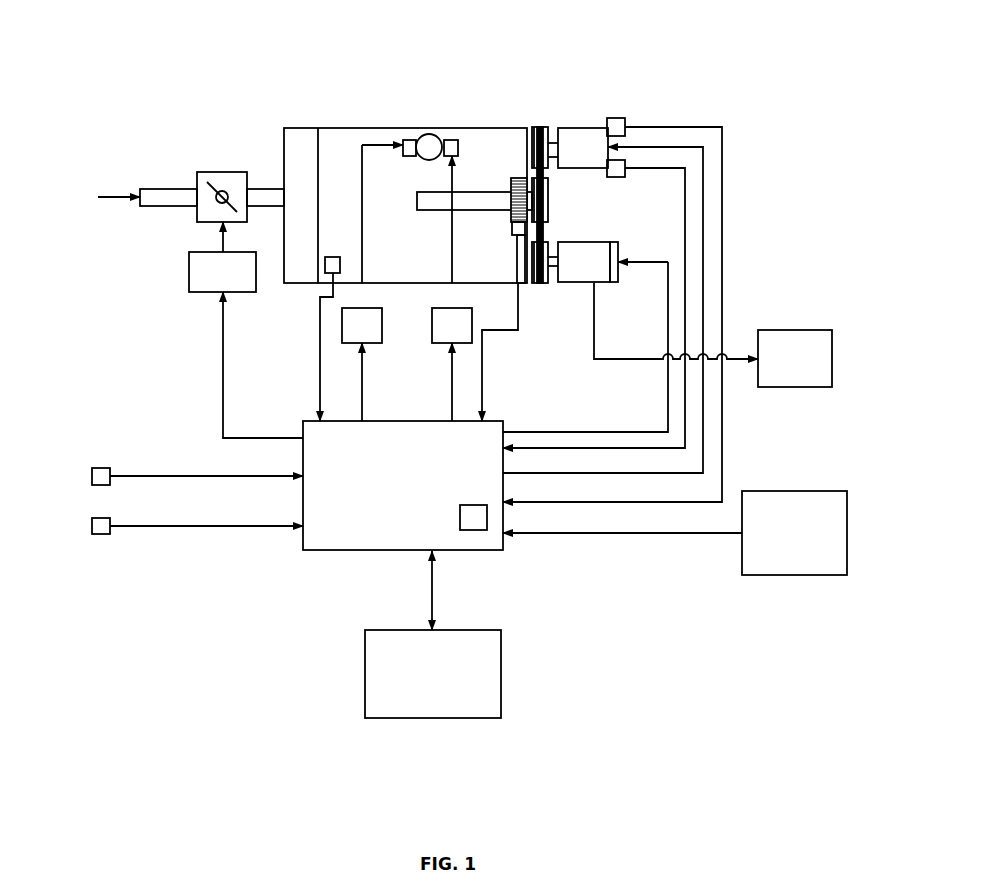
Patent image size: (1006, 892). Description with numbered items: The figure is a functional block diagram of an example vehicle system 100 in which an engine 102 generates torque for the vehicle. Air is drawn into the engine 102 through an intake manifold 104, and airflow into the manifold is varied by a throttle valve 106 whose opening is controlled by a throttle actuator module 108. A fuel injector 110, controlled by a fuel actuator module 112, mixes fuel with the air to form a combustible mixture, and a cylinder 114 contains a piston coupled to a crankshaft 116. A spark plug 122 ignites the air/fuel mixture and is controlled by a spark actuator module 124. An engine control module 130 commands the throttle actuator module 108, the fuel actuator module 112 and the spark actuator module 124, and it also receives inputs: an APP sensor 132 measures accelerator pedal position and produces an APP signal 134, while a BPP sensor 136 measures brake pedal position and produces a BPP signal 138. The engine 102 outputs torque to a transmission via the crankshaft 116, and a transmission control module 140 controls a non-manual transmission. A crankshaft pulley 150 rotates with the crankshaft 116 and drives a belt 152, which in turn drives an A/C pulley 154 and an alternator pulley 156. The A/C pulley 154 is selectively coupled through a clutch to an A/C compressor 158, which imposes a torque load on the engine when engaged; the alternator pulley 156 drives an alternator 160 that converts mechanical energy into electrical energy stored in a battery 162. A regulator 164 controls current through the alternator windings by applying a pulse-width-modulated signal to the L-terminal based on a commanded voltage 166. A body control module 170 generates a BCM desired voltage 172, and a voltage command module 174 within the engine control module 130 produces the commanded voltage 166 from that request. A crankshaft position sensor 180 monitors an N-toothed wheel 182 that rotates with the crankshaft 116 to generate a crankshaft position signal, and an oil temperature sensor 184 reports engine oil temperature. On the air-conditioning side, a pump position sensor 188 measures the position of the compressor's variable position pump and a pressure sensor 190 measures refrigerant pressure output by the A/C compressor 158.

The vehicle system 100 is at (890, 35).
The engine 102 is at (398, 176).
The intake manifold 104 is at (296, 128).
The throttle valve 106 is at (222, 172).
The throttle actuator module 108 is at (240, 292).
The fuel injector 110 is at (402, 144).
The fuel actuator module 112 is at (383, 325).
The cylinder 114 is at (418, 160).
The crankshaft 116 is at (475, 192).
The spark plug 122 is at (447, 139).
The spark actuator module 124 is at (447, 346).
The engine control module 130 is at (411, 518).
The APP sensor 132 is at (92, 476).
The APP signal 134 is at (197, 476).
The BPP sensor 136 is at (92, 526).
The BPP signal 138 is at (200, 527).
The transmission control module 140 is at (430, 718).
The crankshaft pulley 150 is at (550, 205).
The belt 152 is at (540, 127).
The A/C pulley 154 is at (533, 128).
The alternator pulley 156 is at (549, 284).
The A/C compressor 158 is at (580, 128).
The alternator 160 is at (593, 242).
The battery 162 is at (800, 330).
The regulator 164 is at (607, 285).
The commanded voltage 166 is at (628, 432).
The body control module 170 is at (797, 491).
The BCM desired voltage 172 is at (568, 533).
The voltage command module 174 is at (477, 531).
The crankshaft position sensor 180 is at (512, 236).
The N-toothed wheel 182 is at (511, 211).
The oil temperature sensor 184 is at (325, 266).
The pump position sensor 188 is at (625, 165).
The pressure sensor 190 is at (620, 118).